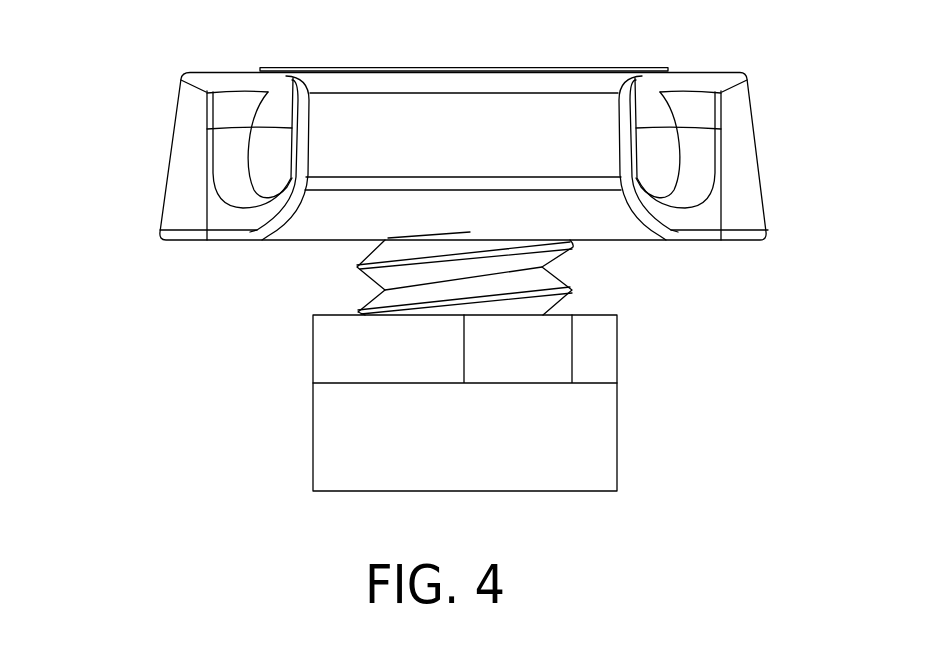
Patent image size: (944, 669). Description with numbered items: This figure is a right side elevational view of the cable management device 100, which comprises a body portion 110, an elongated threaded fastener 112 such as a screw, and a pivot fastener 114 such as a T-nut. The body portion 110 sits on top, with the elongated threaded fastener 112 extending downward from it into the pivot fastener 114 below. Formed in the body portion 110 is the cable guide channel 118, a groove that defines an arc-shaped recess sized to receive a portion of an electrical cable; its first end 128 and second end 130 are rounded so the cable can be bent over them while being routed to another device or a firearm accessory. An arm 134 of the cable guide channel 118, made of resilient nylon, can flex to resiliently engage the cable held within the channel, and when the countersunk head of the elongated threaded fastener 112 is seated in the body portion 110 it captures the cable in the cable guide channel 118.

The cable management device 100 is at (457, 251).
The body portion 110 is at (190, 133).
The elongated threaded fastener 112 is at (357, 266).
The pivot fastener 114 is at (327, 421).
The cable guide channel 118 is at (685, 107).
The first end 128 is at (227, 175).
The second end 130 is at (741, 120).
The arm 134 is at (488, 80).